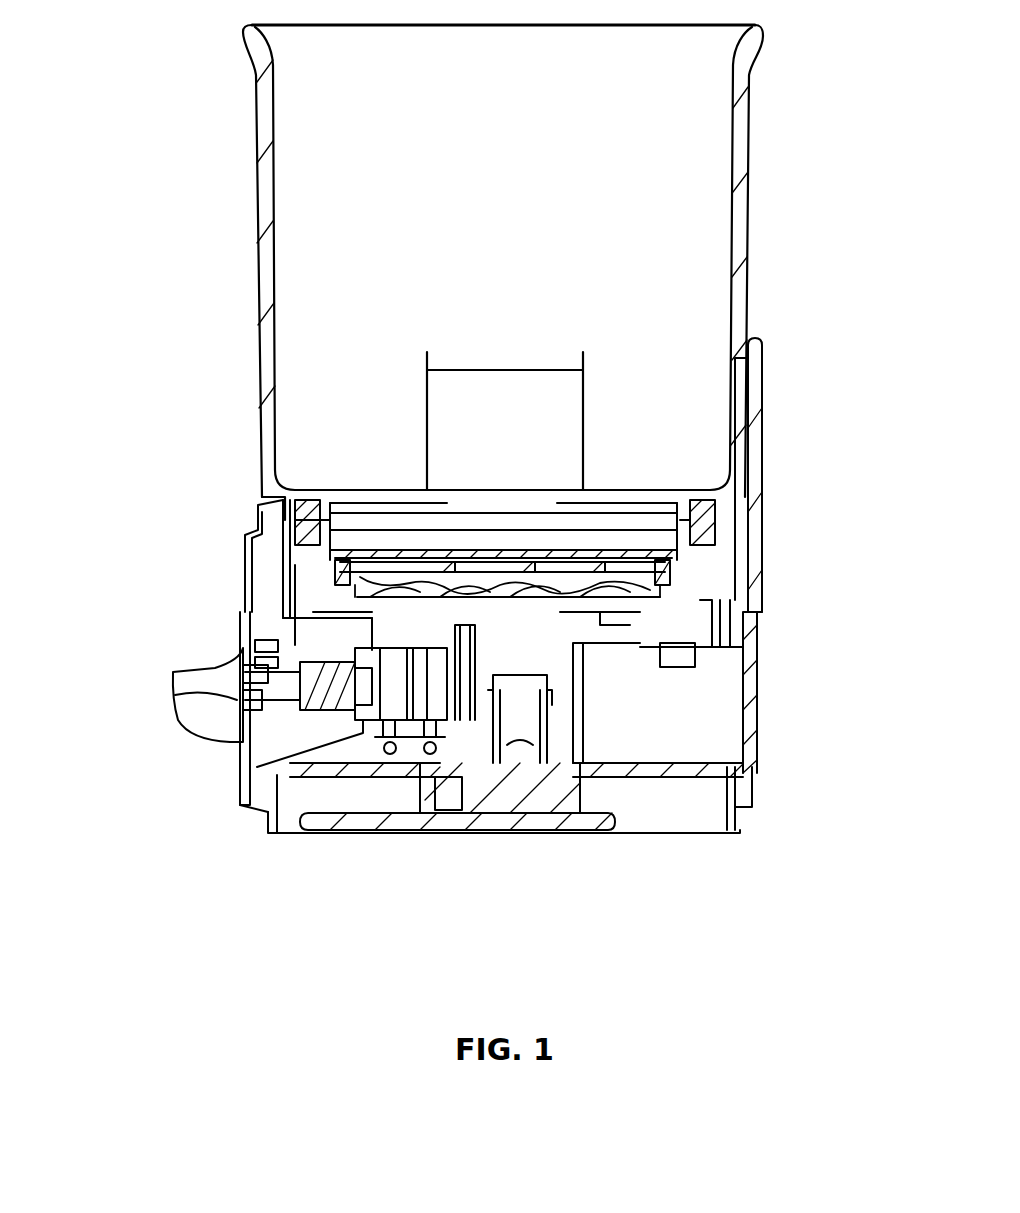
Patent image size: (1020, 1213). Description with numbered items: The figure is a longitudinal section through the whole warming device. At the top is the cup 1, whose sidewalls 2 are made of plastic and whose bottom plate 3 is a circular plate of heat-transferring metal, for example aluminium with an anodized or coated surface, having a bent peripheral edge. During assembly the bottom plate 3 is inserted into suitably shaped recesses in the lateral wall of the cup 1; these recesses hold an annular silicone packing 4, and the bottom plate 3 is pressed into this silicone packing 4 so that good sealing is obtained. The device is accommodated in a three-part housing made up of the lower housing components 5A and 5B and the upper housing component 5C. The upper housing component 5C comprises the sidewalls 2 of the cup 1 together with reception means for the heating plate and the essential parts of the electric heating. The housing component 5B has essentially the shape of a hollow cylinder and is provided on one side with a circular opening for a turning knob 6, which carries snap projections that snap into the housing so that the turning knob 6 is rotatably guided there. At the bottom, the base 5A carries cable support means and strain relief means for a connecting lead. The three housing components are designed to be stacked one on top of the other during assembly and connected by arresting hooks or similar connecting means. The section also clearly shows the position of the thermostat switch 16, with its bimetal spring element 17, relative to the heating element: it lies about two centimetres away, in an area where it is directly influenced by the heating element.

The cup 1 is at (798, 116).
The sidewalls 2 is at (740, 245).
The bottom plate 3 is at (378, 548).
The annular silicone packing 4 is at (705, 530).
The base 5A is at (752, 705).
The housing component 5B is at (245, 600).
The upper housing component 5C is at (290, 553).
The turning knob 6 is at (203, 717).
The thermostat switch 16 is at (392, 688).
The bimetal spring element 17 is at (472, 677).